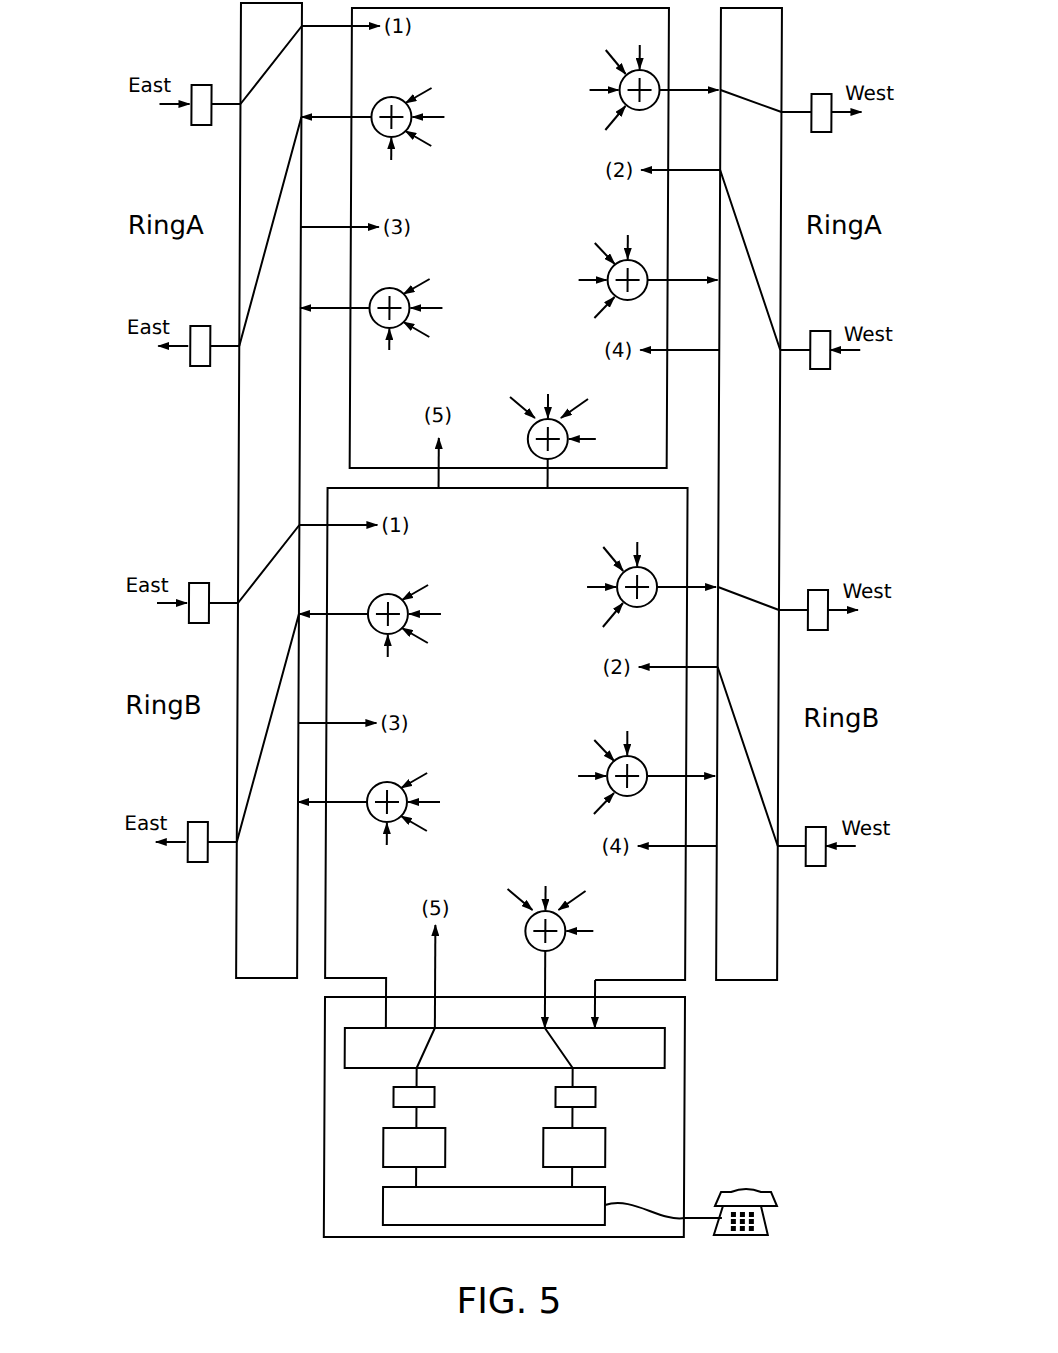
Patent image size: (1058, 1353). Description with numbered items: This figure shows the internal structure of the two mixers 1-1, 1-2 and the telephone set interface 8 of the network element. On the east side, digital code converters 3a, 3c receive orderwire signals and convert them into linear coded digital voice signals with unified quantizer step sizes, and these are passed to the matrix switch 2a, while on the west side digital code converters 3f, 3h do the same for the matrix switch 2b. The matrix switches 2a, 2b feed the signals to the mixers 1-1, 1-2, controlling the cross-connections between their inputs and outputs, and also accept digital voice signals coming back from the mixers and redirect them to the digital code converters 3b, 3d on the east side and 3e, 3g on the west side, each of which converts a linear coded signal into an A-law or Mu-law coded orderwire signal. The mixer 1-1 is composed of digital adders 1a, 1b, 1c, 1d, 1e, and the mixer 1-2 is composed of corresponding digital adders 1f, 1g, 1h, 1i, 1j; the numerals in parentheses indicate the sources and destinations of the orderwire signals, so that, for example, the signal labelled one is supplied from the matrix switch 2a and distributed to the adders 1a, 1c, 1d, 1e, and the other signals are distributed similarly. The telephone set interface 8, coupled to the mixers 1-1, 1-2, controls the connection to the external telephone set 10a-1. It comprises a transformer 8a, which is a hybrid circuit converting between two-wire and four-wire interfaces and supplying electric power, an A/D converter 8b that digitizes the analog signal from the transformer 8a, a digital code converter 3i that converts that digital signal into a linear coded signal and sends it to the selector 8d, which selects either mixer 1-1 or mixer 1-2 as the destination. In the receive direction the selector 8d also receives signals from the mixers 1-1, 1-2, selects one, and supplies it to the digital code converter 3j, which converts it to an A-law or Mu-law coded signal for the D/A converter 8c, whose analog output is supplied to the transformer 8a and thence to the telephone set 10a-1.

The digital adder 1a is at (620, 82).
The digital adder 1b is at (385, 100).
The digital adder 1c is at (610, 272).
The digital adder 1d is at (386, 328).
The digital adder 1e is at (532, 448).
The digital adder 1f is at (620, 579).
The digital adder 1g is at (384, 598).
The digital adder 1h is at (610, 766).
The digital adder 1i is at (376, 818).
The digital adder 1j is at (532, 940).
The mixer 1-1 is at (505, 469).
The mixer 1-2 is at (692, 932).
The matrix switch 2a is at (241, 413).
The matrix switch 2b is at (783, 447).
The digital code converter 3a is at (202, 85).
The digital code converter 3b is at (202, 326).
The digital code converter 3c is at (202, 583).
The digital code converter 3d is at (202, 822).
The digital code converter 3e is at (822, 94).
The digital code converter 3f is at (822, 331).
The digital code converter 3g is at (822, 590).
The digital code converter 3h is at (822, 827).
The digital code converter 3i is at (399, 1103).
The digital code converter 3j is at (561, 1104).
The telephone set interface 8 is at (323, 1046).
The transformer 8a is at (389, 1205).
The A/D converter 8b is at (389, 1148).
The D/A converter 8c is at (549, 1150).
The selector 8d is at (630, 1068).
The telephone set 10a-1 is at (746, 1187).